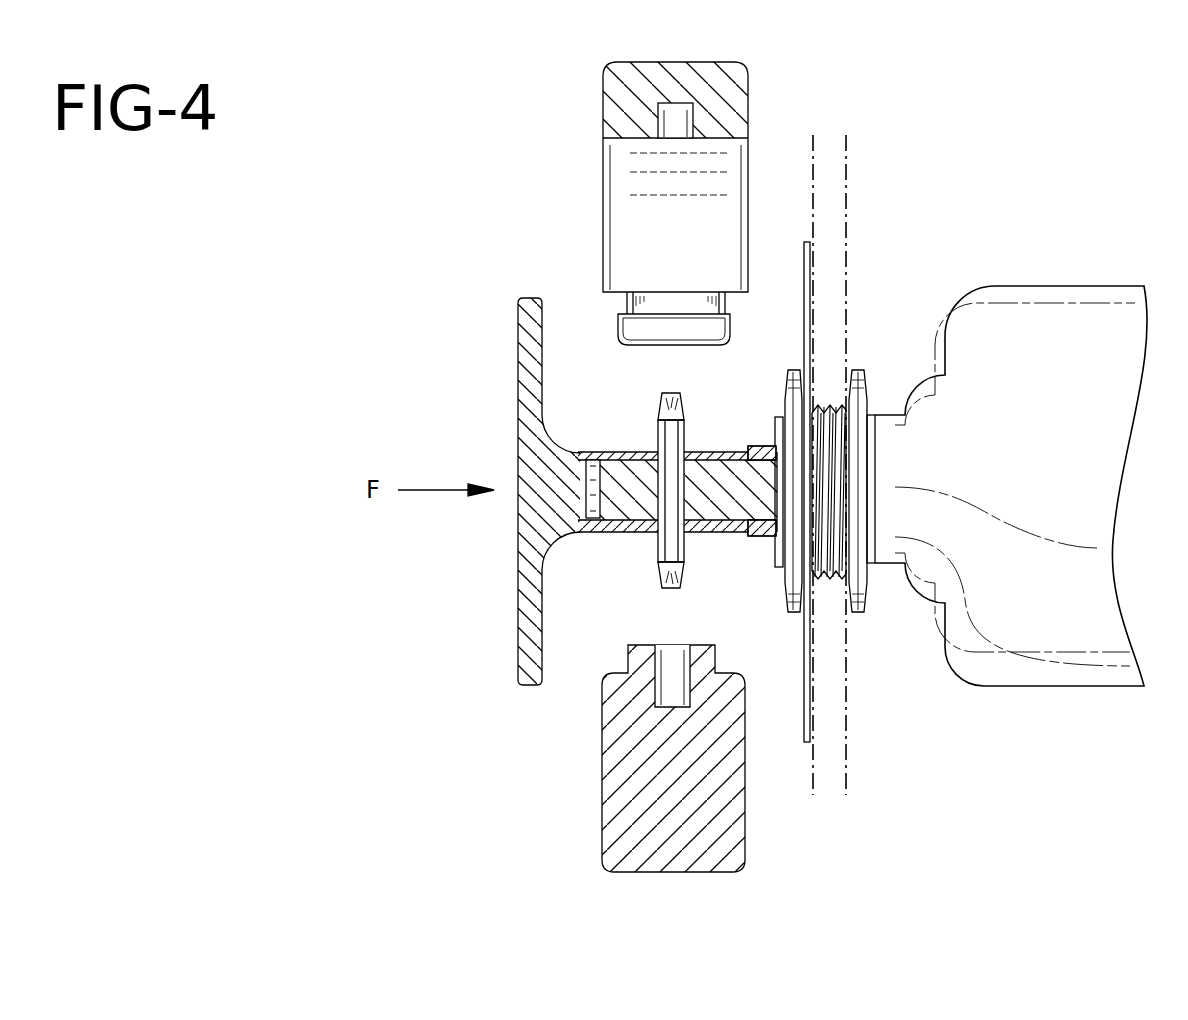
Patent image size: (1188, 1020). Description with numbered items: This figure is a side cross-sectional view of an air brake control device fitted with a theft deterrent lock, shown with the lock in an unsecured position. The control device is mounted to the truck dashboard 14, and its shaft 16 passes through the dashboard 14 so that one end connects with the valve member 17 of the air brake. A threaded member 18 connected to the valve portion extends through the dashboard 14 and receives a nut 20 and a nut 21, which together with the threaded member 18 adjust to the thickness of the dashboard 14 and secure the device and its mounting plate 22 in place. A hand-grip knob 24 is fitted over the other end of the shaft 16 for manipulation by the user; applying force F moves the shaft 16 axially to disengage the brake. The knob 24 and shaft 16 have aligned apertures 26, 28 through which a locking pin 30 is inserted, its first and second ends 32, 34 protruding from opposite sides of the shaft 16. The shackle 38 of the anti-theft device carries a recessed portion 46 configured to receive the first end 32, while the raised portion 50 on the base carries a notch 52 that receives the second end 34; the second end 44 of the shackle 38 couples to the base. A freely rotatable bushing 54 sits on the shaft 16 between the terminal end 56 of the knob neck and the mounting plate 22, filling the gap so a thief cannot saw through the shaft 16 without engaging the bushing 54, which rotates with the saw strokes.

The dashboard 14 is at (850, 200).
The shaft 16 is at (613, 535).
The valve member 17 is at (1065, 312).
The threaded member 18 is at (783, 565).
The nut 20 is at (792, 615).
The nut 21 is at (858, 372).
The mounting plate 22 is at (804, 250).
The hand-grip knob 24 is at (525, 580).
The aperture 26 is at (686, 437).
The aperture 28 is at (613, 502).
The locking pin 30 is at (662, 440).
The first end 32 is at (664, 405).
The second end 34 is at (663, 580).
The shackle 38 is at (630, 165).
The second end 44 is at (628, 328).
The recessed portion 46 is at (680, 118).
The raised portion 50 is at (627, 655).
The notch 52 is at (665, 660).
The bushing 54 is at (763, 443).
The terminal end 56 is at (762, 525).